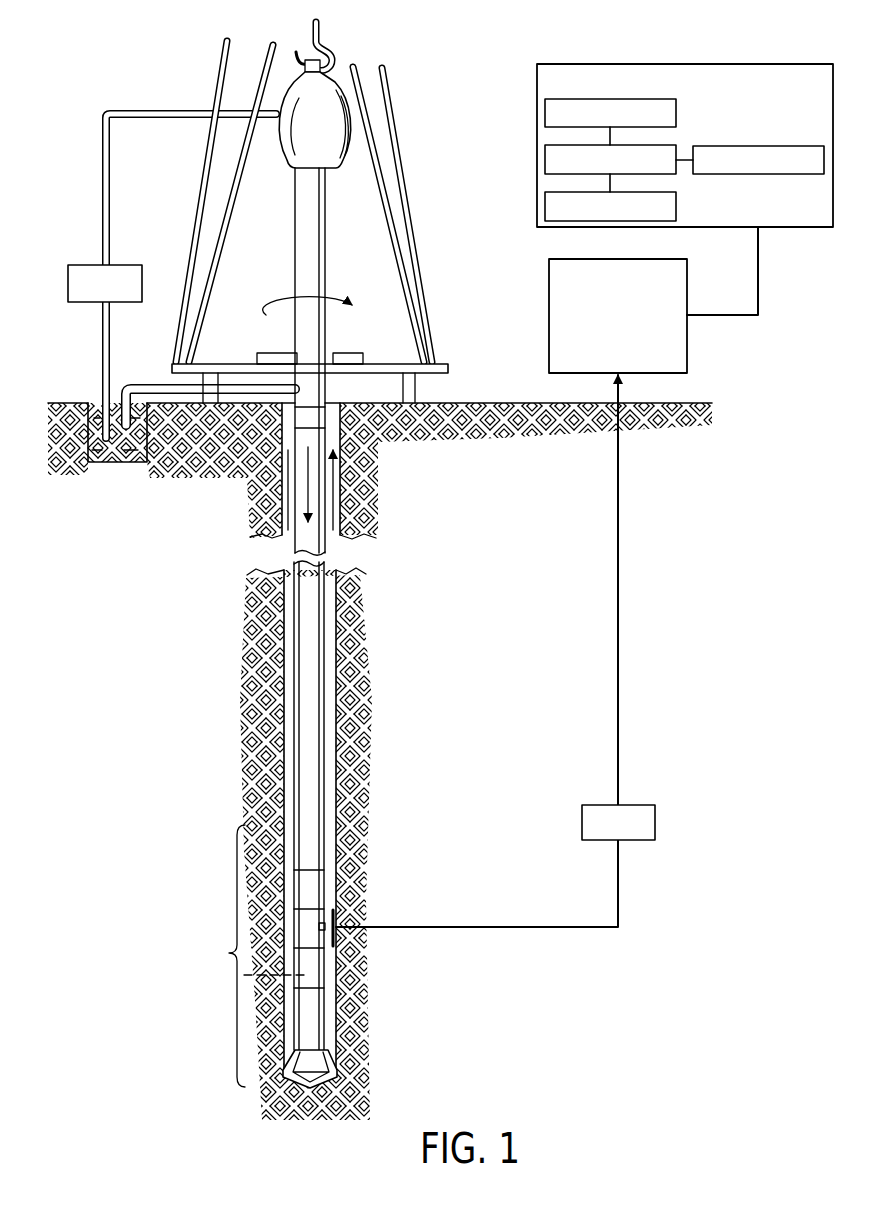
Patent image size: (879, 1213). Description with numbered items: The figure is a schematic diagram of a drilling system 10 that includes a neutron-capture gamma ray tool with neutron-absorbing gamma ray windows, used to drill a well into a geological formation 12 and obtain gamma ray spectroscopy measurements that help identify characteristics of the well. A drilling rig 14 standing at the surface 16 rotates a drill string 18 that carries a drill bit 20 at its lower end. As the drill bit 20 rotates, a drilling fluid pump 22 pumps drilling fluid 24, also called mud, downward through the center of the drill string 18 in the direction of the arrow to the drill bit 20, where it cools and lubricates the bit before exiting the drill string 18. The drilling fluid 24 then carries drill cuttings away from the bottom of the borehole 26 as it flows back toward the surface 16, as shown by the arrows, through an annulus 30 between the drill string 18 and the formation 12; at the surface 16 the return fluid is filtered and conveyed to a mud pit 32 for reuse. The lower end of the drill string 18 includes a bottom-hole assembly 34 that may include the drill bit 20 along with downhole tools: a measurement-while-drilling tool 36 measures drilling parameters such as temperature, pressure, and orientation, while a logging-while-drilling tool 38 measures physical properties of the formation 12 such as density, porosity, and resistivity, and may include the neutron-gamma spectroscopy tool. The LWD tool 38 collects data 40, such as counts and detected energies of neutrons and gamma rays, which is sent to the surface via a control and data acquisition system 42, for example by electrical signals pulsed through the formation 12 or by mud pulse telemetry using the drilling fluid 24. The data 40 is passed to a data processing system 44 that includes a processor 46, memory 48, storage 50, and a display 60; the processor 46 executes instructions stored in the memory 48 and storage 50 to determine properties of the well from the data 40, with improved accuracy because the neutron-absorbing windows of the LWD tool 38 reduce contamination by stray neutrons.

The drilling system 10 is at (466, 61).
The geological formation 12 is at (472, 727).
The drilling rig 14 is at (422, 132).
The surface 16 is at (484, 400).
The drill string 18 is at (308, 398).
The drill bit 20 is at (316, 1066).
The drilling fluid pump 22 is at (68, 280).
The drilling fluid 24 is at (286, 484).
The borehole 26 is at (282, 695).
The annulus 30 is at (333, 402).
The mud pit 32 is at (118, 470).
The bottom-hole assembly 34 is at (254, 956).
The measurement-while-drilling tool 36 is at (316, 889).
The logging-while-drilling tool 38 is at (316, 965).
The data 40 is at (655, 822).
The control and data acquisition system 42 is at (549, 292).
The data processing system 44 is at (685, 123).
The processor 46 is at (676, 168).
The memory 48 is at (678, 112).
The storage 50 is at (676, 212).
The display 60 is at (760, 146).